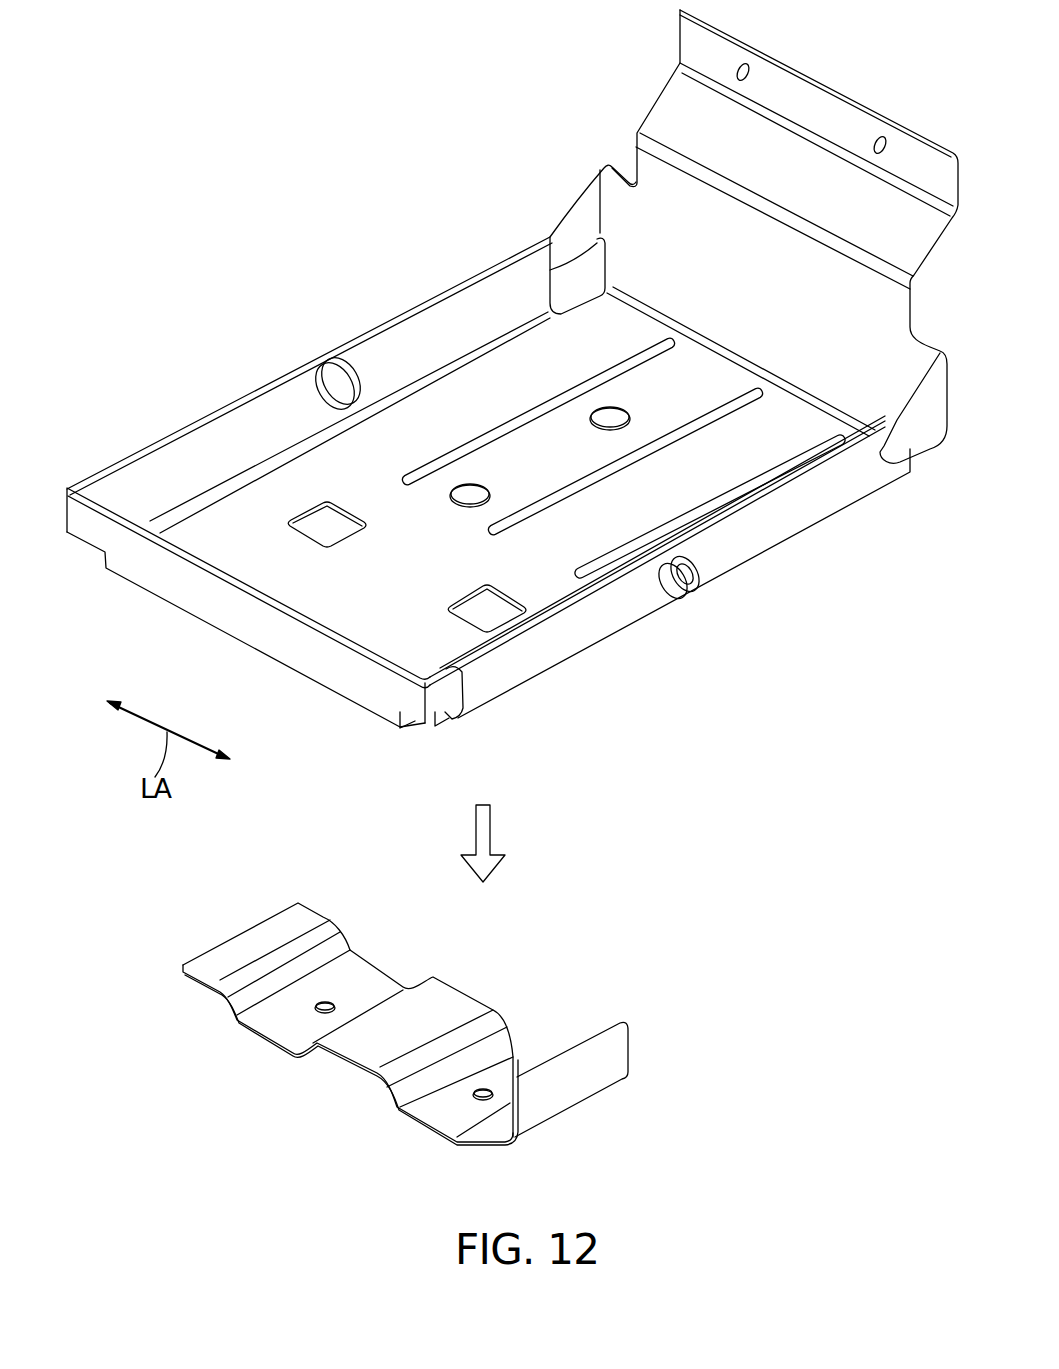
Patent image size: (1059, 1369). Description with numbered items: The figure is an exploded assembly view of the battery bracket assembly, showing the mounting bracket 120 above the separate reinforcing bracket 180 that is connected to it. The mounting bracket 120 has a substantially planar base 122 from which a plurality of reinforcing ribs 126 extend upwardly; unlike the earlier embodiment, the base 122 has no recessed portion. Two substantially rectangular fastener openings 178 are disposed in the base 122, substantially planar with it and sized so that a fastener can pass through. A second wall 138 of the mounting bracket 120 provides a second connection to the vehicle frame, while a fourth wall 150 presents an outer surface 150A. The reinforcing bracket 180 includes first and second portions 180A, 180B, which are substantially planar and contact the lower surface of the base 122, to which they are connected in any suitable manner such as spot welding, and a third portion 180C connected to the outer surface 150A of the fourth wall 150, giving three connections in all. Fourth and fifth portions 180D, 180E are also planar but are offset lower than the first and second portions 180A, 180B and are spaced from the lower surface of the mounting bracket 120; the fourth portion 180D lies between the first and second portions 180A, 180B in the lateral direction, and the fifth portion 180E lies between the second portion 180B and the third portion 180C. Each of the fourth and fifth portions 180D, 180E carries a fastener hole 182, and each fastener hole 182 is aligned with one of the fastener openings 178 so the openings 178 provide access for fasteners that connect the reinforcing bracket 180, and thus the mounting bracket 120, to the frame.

The mounting bracket 120 is at (197, 422).
The base 122 is at (700, 477).
The reinforcing ribs 126 is at (717, 400).
The second wall 138 is at (663, 100).
The fourth wall 150 is at (843, 487).
The outer surface 150A is at (573, 632).
The fastener opening 178 is at (350, 545).
The reinforcing bracket 180 is at (560, 1122).
The first portion 180A is at (240, 945).
The second portion 180B is at (442, 1007).
The third portion 180C is at (590, 1070).
The fourth portion 180D is at (275, 1027).
The fifth portion 180E is at (437, 1108).
The fastener hole 182 is at (318, 1003).